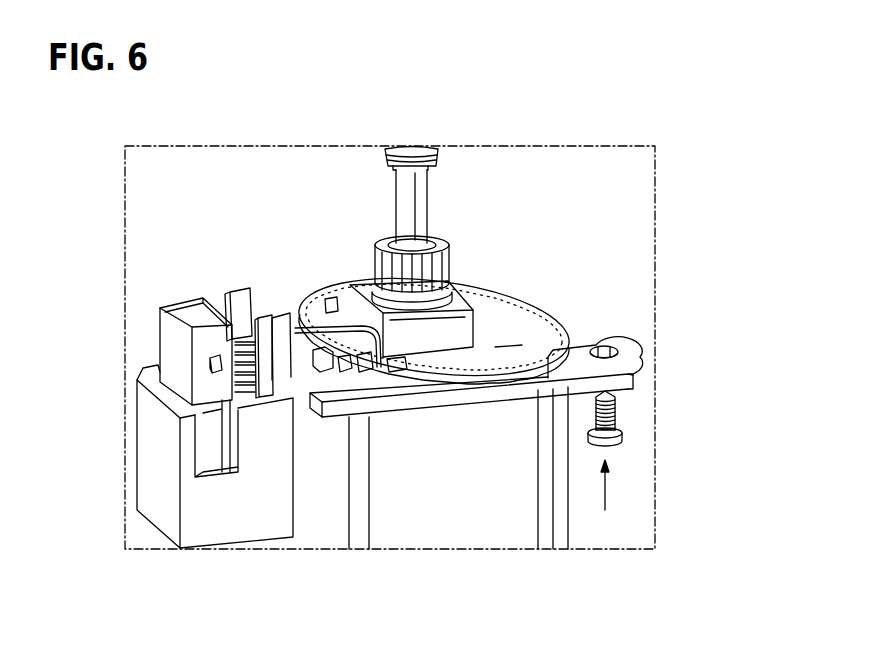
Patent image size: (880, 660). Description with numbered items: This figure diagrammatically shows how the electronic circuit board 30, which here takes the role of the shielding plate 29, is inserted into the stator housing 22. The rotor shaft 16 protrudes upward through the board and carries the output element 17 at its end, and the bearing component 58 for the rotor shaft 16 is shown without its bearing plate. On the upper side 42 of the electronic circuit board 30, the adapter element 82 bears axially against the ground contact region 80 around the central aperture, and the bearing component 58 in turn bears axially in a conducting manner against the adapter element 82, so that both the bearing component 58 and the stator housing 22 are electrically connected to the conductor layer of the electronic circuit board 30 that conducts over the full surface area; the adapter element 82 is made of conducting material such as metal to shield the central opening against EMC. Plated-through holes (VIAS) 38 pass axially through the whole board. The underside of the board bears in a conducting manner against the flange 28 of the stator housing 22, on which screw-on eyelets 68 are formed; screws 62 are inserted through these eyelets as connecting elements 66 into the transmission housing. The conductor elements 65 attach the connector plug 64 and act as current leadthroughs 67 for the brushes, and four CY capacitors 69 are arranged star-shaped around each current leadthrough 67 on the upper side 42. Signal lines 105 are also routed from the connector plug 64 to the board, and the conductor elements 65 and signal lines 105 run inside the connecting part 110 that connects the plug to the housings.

The output element 17 is at (415, 162).
The rotor shaft 16 is at (408, 208).
The bearing component 58 is at (382, 268).
The ground contact region 80 is at (447, 353).
The adapter element 82 is at (425, 340).
The electronic circuit board 30 is at (523, 323).
The shielding plate 29 is at (468, 276).
The upper side 42 is at (540, 341).
The flange 28 is at (623, 368).
The screw-on eyelets 68 is at (610, 346).
The stator housing 22 is at (457, 524).
The screws 62 is at (613, 420).
The connecting elements 66 is at (684, 452).
The connector plug 64 is at (247, 507).
The connecting part 110 is at (167, 348).
The signal lines 105 is at (245, 340).
The conductor elements 65 is at (318, 355).
The CY capacitors 69 is at (367, 358).
The current leadthroughs 67 is at (378, 350).
The plated-through holes (VIAS) 38 is at (519, 345).